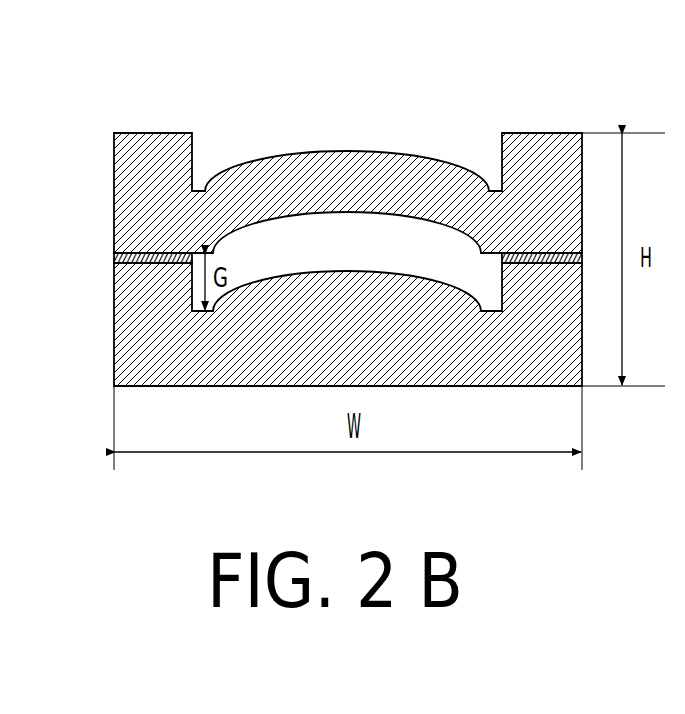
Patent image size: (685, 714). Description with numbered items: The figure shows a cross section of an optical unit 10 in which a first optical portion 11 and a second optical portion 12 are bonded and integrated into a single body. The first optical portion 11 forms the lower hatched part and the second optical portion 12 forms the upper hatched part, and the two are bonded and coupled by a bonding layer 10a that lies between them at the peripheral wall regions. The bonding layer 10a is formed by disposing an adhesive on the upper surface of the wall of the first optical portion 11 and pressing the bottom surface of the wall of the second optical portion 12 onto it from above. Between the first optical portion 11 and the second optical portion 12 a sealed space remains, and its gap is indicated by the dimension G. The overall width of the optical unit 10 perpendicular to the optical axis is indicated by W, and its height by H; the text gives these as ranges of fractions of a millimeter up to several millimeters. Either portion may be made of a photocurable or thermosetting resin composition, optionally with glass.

The optical unit 10 is at (535, 122).
The bonding layer 10a is at (114, 257).
The first optical portion 11 is at (114, 327).
The second optical portion 12 is at (114, 183).